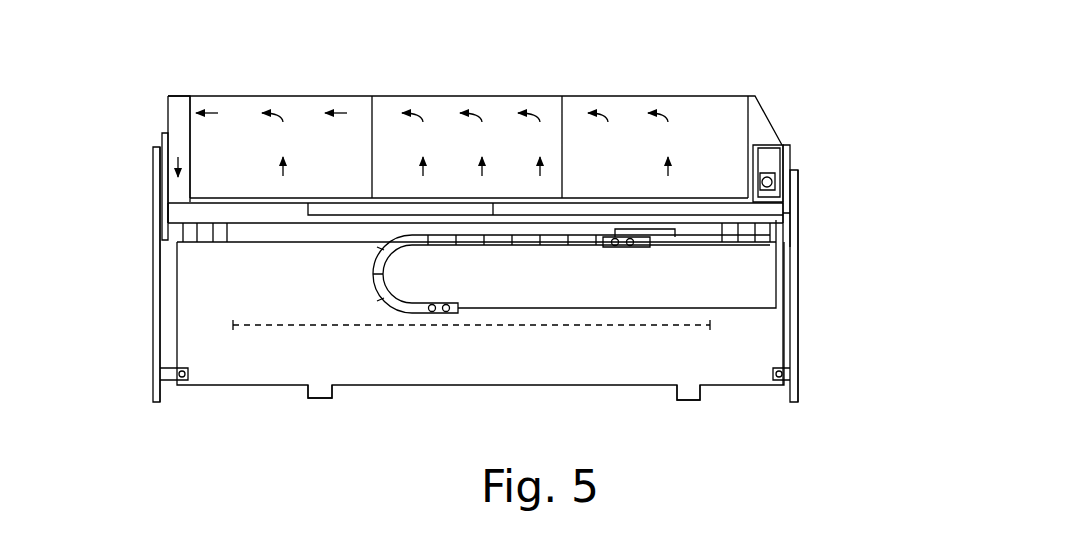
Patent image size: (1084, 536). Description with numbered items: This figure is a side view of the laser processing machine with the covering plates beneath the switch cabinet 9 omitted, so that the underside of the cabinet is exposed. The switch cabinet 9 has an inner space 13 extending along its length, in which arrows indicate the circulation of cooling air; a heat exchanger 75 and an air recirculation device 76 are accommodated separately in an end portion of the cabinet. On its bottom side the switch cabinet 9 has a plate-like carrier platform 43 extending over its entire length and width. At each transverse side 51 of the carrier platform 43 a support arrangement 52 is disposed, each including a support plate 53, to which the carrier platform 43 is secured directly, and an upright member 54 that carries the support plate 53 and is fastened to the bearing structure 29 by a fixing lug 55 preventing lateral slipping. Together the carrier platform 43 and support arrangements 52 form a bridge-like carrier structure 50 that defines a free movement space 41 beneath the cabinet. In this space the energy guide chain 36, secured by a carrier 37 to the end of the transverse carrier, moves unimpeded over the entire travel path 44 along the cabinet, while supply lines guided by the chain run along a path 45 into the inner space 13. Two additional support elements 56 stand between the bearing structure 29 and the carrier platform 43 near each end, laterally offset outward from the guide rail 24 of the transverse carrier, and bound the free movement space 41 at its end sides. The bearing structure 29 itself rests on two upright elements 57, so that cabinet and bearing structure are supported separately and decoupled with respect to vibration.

The switch cabinet 9 is at (497, 88).
The inner space 13 is at (465, 152).
The guide rails 24 is at (297, 248).
The bearing structure 29 is at (190, 300).
The energy guide chain 36 is at (497, 245).
The carrier 37 is at (660, 242).
The free movement space 41 is at (330, 236).
The carrier platform 43 is at (603, 210).
The travel path 44 is at (585, 327).
The path 45 is at (778, 275).
The bridge-like carrier structure 50 is at (130, 187).
The transverse side 51 is at (170, 213).
The support arrangement 52 is at (150, 243).
The support plate 53 is at (165, 130).
The upright member 54 is at (158, 185).
The fixing lug 55 is at (172, 382).
The support elements 56 is at (222, 240).
The upright elements 57 is at (322, 394).
The heat exchanger 75 is at (178, 100).
The air recirculation device 76 is at (180, 188).